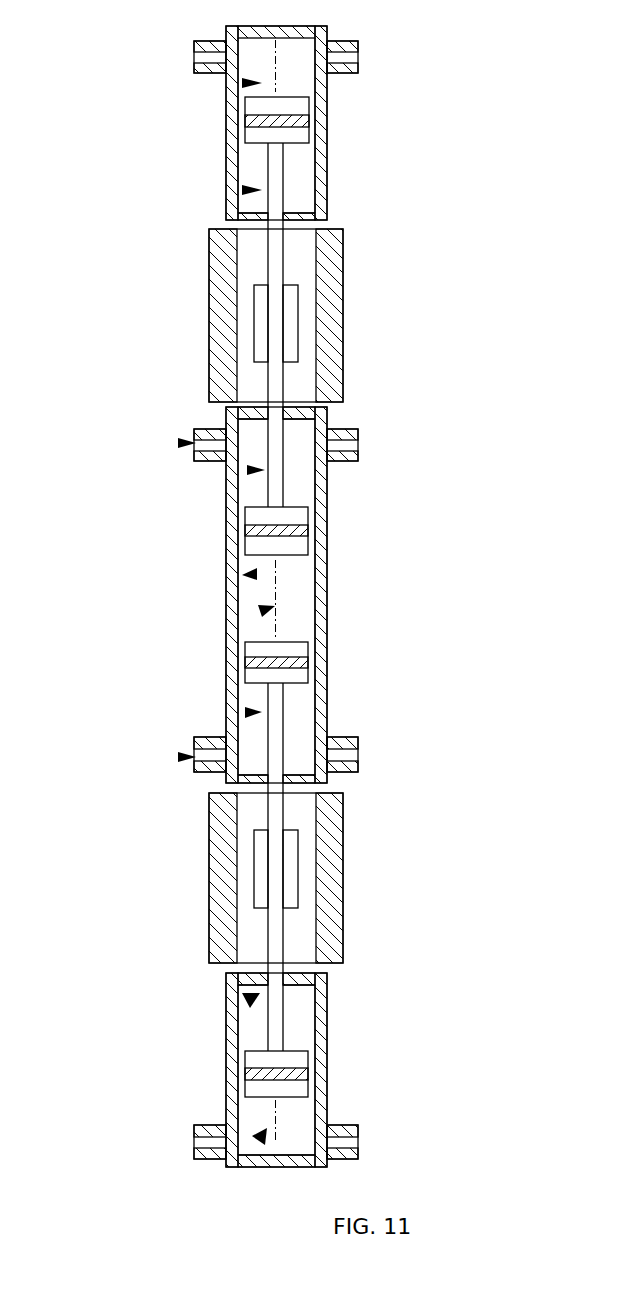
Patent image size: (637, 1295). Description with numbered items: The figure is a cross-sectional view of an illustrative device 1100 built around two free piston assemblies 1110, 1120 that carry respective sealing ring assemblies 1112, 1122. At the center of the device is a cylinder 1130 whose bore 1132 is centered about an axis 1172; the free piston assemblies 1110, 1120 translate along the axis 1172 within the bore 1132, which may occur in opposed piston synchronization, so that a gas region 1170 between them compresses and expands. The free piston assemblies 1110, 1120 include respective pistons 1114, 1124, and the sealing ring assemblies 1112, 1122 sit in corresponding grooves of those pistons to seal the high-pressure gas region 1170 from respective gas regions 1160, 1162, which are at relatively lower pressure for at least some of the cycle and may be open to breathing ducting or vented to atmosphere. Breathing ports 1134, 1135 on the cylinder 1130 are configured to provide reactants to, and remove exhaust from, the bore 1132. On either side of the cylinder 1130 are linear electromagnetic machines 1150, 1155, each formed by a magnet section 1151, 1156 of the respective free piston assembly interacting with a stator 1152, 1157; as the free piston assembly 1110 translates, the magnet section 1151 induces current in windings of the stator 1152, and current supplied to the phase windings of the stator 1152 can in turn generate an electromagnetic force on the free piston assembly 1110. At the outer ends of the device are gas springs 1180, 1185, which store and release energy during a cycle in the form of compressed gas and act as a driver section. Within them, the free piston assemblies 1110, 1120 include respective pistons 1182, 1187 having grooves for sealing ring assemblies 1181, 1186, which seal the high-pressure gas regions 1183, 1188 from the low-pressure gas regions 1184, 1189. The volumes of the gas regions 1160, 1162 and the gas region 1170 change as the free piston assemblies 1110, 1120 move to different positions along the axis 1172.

The device 1100 is at (62, 147).
The free piston assembly 1110 is at (255, 276).
The sealing ring assembly 1112 is at (327, 522).
The piston 1114 is at (226, 560).
The free piston assembly 1120 is at (255, 945).
The sealing ring assembly 1122 is at (327, 662).
The piston 1124 is at (226, 657).
The cylinder 1130 is at (263, 589).
The bore 1132 is at (327, 563).
The breathing port 1134 is at (178, 757).
The breathing port 1135 is at (178, 443).
The linear electromagnetic machine 1150 is at (292, 315).
The magnet section 1151 is at (254, 330).
The stator 1152 is at (209, 380).
The linear electromagnetic machine 1155 is at (294, 878).
The magnet section 1156 is at (254, 865).
The stator 1157 is at (209, 898).
The gas region 1160 is at (226, 468).
The gas region 1162 is at (226, 712).
The gas region 1170 is at (226, 610).
The axis 1172 is at (277, 1115).
The gas spring 1180 is at (304, 122).
The sealing ring assembly 1181 is at (341, 123).
The piston 1182 is at (315, 148).
The gas region 1183 is at (226, 90).
The gas region 1184 is at (226, 195).
The gas spring 1185 is at (270, 606).
The sealing ring assembly 1186 is at (315, 1080).
The piston 1187 is at (226, 1058).
The gas region 1188 is at (258, 1138).
The gas region 1189 is at (226, 1003).